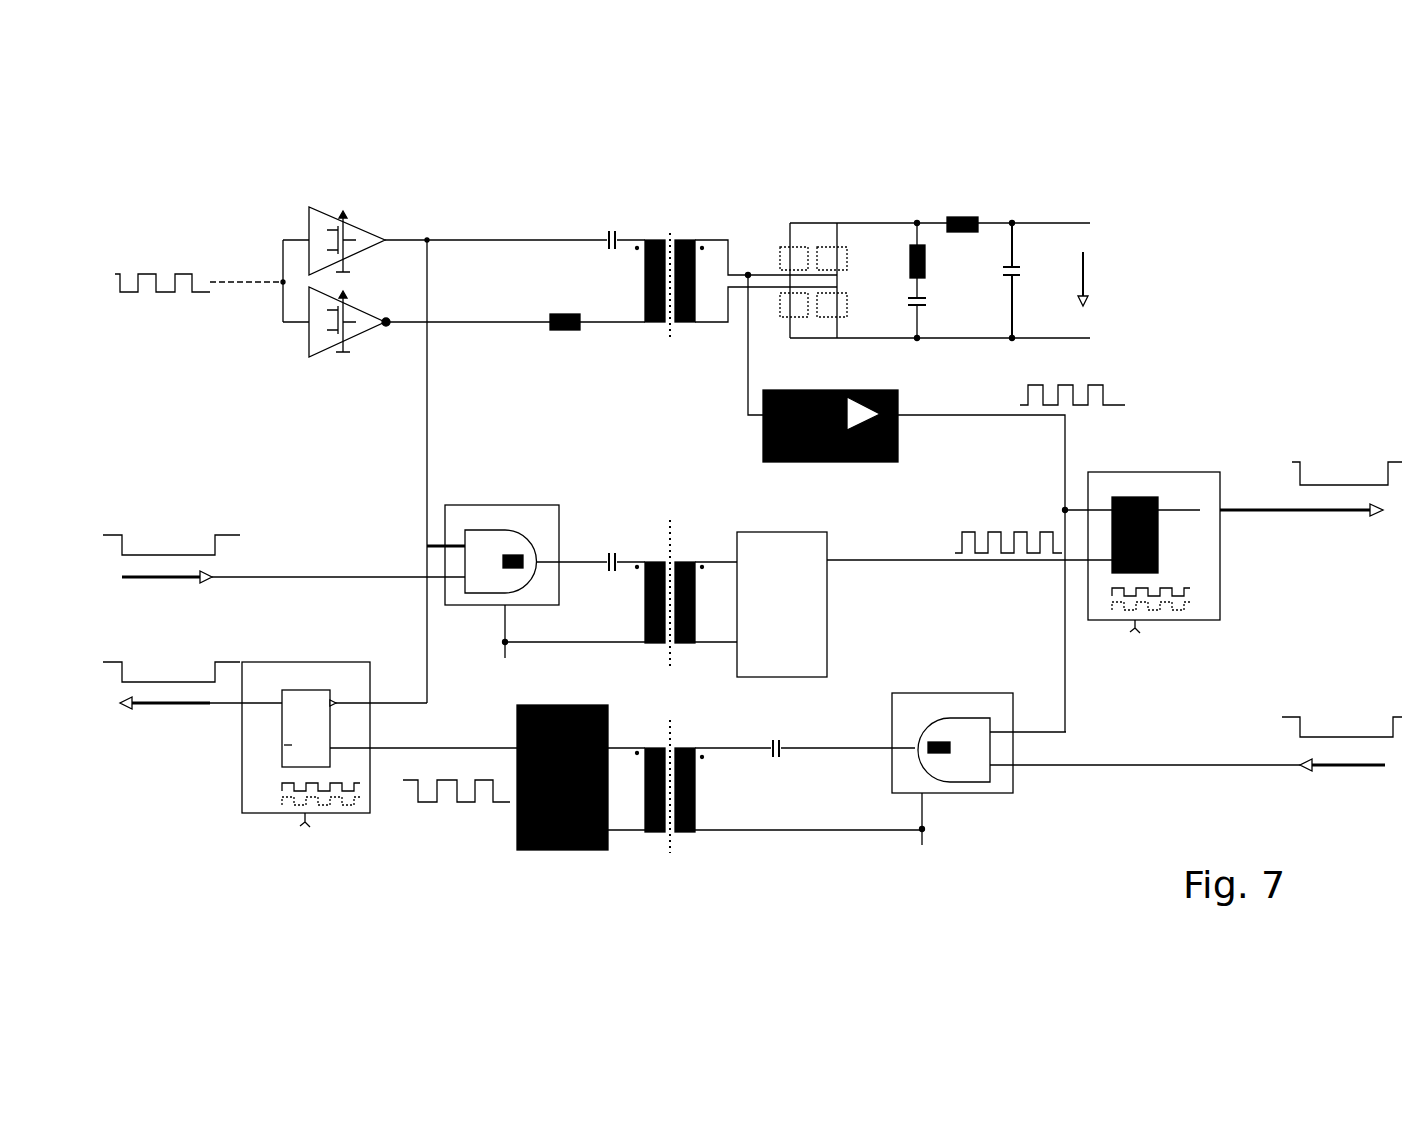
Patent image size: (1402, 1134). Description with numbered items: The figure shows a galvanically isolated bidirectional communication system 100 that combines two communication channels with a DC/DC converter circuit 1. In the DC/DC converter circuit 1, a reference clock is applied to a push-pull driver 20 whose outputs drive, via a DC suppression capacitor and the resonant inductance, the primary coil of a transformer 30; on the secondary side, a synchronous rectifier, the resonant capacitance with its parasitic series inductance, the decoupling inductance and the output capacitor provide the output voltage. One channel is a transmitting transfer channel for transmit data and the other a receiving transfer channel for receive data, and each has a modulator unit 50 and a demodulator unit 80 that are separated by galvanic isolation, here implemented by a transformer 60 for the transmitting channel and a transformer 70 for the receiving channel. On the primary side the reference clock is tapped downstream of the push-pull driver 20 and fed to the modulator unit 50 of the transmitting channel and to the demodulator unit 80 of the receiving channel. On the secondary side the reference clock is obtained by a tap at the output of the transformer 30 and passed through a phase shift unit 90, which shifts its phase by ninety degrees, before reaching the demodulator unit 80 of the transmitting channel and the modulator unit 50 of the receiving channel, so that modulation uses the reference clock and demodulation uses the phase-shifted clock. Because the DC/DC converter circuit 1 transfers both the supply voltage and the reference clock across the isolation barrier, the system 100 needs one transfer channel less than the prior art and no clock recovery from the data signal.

The DC/DC converter circuit 1 is at (1096, 206).
The push-pull driver 20 is at (372, 192).
The transformer 30 is at (690, 203).
The modulator unit 50 is at (525, 486).
The transformer of transmitting transfer channel 60 is at (678, 484).
The transformer of receiving transfer channel 70 is at (690, 842).
The demodulator unit 80 is at (1174, 459).
The phase shift unit 90 is at (830, 384).
The bidirectional communication system 100 is at (1268, 206).